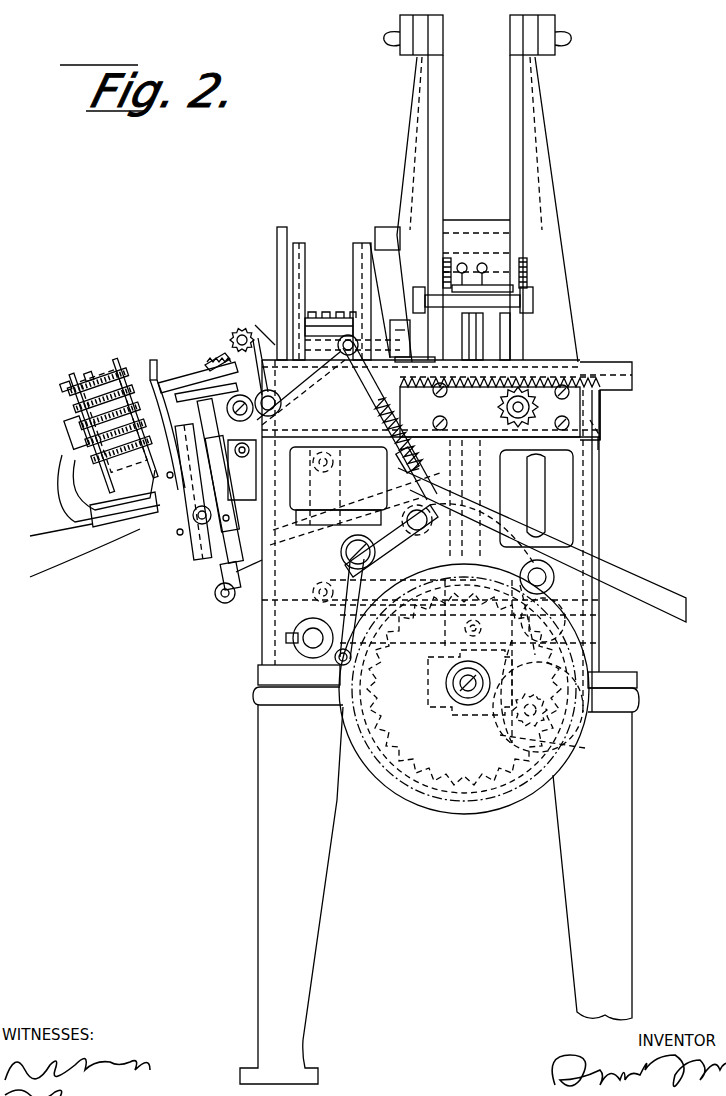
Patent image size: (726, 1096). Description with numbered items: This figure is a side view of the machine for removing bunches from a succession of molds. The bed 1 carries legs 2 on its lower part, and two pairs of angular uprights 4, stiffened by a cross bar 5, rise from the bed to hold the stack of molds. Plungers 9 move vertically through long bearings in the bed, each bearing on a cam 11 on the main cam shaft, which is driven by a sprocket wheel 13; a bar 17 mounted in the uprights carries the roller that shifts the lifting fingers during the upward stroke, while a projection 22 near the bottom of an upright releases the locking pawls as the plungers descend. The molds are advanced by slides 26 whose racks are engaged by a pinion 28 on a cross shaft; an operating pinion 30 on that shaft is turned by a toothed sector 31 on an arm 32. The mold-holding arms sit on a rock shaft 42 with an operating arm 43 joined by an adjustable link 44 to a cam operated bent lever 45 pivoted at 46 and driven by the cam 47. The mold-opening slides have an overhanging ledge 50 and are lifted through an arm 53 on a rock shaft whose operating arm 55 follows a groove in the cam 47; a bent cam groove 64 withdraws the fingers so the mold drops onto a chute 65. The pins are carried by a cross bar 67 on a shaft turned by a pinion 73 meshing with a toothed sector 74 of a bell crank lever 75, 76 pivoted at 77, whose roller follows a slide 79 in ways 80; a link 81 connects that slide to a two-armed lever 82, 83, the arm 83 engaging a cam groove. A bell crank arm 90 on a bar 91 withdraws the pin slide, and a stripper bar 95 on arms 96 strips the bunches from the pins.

The bed 1 is at (598, 482).
The legs 2 is at (439, 874).
The angular uprights 4 is at (410, 182).
The cross bar 5 is at (400, 40).
The plungers 9 is at (465, 345).
The cam 11 is at (565, 762).
The sprocket wheel 13 is at (382, 775).
The bar 17 is at (526, 283).
The projection 22 is at (512, 348).
The slides 26 is at (595, 365).
The pinion 28 is at (600, 432).
The operating pinion 30 is at (497, 410).
The toothed sector 31 is at (600, 446).
The arm 32 is at (536, 498).
The rock shaft 42 is at (282, 405).
The operating arm 43 is at (340, 352).
The adjustable link 44 is at (405, 450).
The cam operated bent lever 45 is at (403, 523).
The pivot 46 is at (341, 552).
The cam 47 is at (436, 805).
The overhanging ledge 50 is at (315, 316).
The arm 53 is at (396, 591).
The operating arm 55 is at (550, 585).
The cam groove 64 is at (305, 252).
The chute 65 is at (630, 577).
The cross bar 67 is at (252, 334).
The pinion 73 is at (240, 328).
The toothed sector 74 is at (222, 358).
The bell crank lever arm 75 is at (218, 378).
The bell crank lever arm 76 is at (226, 405).
The pivot 77 is at (240, 458).
The slide 79 is at (198, 556).
The ways 80 is at (195, 522).
The link 81 is at (218, 575).
The lever arm 82 is at (236, 600).
The lever arm 83 is at (428, 560).
The bell crank lever arm 90 is at (478, 634).
The bar 91 is at (300, 645).
The stripper bar 95 is at (150, 372).
The arms 96 is at (162, 385).